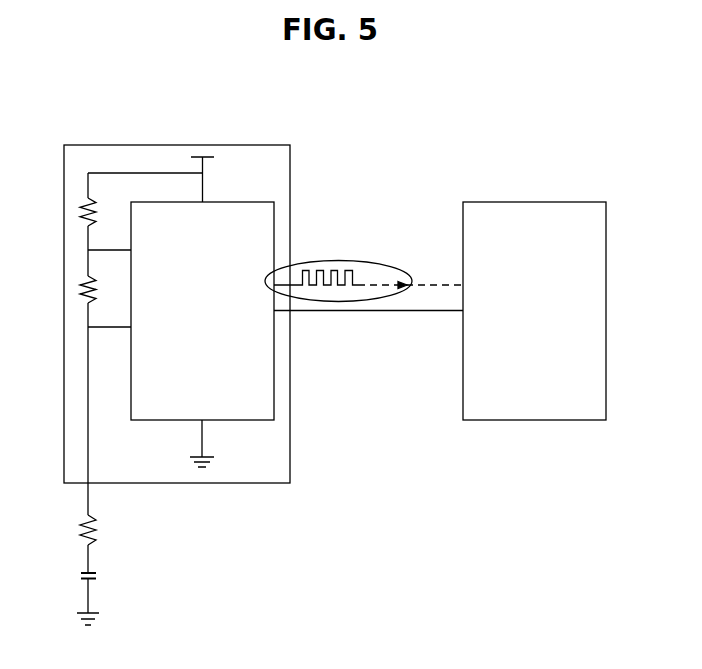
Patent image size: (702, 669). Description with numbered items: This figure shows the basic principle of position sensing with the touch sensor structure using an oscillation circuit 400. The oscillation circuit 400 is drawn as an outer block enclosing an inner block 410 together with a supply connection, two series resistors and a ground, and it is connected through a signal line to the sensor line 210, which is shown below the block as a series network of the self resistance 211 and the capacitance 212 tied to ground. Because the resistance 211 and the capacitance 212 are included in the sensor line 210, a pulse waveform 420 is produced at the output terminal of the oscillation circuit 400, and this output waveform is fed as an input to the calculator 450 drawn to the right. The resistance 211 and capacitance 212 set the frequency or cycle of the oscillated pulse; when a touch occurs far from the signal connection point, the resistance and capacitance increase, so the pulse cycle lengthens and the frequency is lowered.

The oscillation circuit 400 is at (227, 145).
The controller 410 is at (259, 391).
The pulse waveform 420 is at (362, 260).
The calculator 450 is at (530, 405).
The sensor line 210 is at (158, 570).
The self resistance 211 is at (91, 540).
The capacitance 212 is at (93, 579).